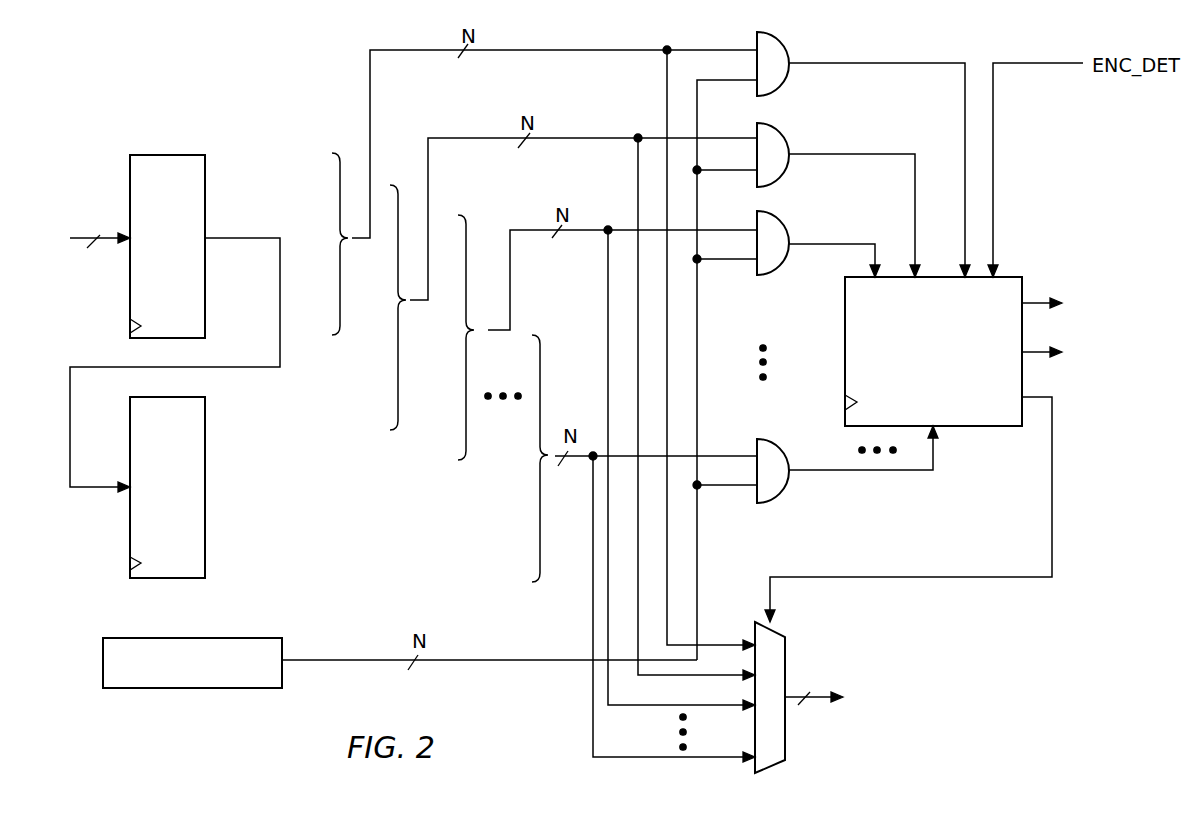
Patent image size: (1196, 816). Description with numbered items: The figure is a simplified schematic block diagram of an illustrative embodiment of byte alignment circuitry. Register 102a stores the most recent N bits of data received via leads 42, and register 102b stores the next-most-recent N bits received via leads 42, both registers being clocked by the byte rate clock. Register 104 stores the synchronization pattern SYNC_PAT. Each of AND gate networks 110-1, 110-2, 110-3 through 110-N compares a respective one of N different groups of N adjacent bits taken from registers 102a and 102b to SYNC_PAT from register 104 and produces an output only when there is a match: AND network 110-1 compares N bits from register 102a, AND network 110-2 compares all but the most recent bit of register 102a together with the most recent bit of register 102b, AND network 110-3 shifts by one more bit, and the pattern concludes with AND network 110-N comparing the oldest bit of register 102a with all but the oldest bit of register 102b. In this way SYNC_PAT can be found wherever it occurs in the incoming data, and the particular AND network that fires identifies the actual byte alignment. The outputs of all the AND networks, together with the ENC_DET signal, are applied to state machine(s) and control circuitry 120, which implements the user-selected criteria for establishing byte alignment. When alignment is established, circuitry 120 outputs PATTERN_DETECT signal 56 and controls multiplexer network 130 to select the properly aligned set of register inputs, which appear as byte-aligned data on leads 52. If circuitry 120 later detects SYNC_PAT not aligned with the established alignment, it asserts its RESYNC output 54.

The register 102a is at (195, 155).
The register 102b is at (206, 566).
The register 104 is at (242, 638).
The leads 42 is at (106, 243).
The AND gate network 110-1 is at (773, 53).
The AND gate network 110-2 is at (773, 148).
The AND gate network 110-3 is at (773, 233).
The AND gate network 110-N is at (770, 503).
The state machine(s) and control circuitry 120 is at (1010, 277).
The multiplexer network 130 is at (787, 643).
The PATTERN_DETECT signal 56 is at (1037, 302).
The RESYNC output 54 is at (1040, 353).
The leads 52 is at (815, 700).